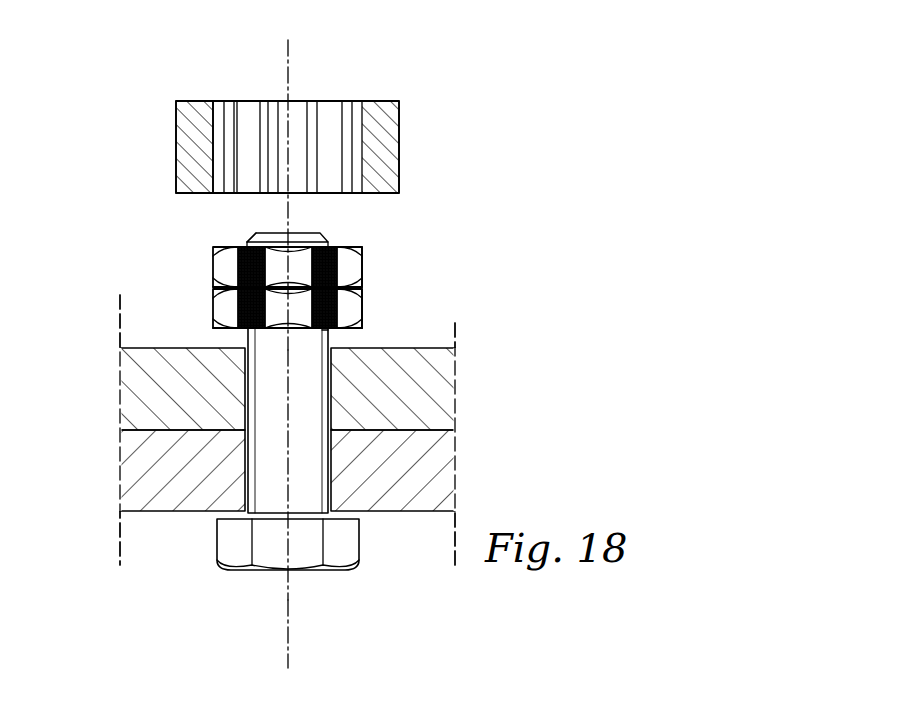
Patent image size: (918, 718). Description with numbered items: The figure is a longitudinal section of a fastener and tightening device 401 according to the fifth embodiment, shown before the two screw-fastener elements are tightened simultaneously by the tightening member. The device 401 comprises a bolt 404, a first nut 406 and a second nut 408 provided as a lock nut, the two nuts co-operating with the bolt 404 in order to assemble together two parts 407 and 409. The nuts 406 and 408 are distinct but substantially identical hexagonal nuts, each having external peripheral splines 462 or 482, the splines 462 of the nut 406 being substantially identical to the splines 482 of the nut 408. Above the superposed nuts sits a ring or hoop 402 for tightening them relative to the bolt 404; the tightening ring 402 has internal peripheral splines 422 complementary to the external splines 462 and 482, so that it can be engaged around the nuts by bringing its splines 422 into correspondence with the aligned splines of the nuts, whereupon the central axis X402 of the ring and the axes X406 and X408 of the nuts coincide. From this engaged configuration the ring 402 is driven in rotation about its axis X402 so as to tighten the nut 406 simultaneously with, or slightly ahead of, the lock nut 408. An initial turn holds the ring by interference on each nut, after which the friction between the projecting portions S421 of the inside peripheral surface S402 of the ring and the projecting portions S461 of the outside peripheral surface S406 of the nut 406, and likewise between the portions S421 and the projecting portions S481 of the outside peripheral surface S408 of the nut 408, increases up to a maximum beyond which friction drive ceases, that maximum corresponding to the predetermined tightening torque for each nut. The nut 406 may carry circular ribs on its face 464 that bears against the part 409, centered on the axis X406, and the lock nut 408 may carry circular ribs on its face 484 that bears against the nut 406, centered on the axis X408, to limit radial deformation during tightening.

The device 401 is at (290, 342).
The tightening ring 402 is at (368, 132).
The internal peripheral splines 422 is at (280, 113).
The projecting portions of the inside peripheral surface of the ring S421 is at (328, 132).
The inside peripheral surface of the ring S402 is at (216, 149).
The bolt 404 is at (225, 417).
The first nut 406 is at (322, 288).
The second nut 408 is at (320, 244).
The outside peripheral surface of the nut S406 is at (369, 307).
The outside peripheral surface of the nut S408 is at (369, 259).
The external peripheral splines 482 is at (345, 262).
The face 484 is at (224, 290).
The projecting portions of the outside peripheral surface of the nut S481 is at (242, 245).
The external peripheral splines 462 is at (283, 318).
The face 464 is at (225, 331).
The projecting portions of the outside peripheral surface of the nut S461 is at (322, 330).
The part 409 is at (438, 402).
The part 407 is at (438, 477).
The central axis of the ring X402 is at (309, 183).
The central axis of the nut X406 is at (309, 489).
The central axis of the nut X408 is at (309, 634).